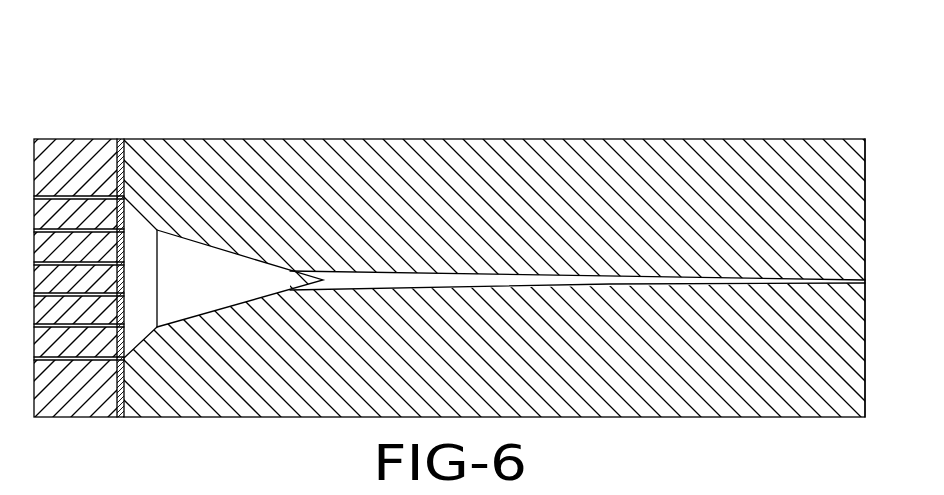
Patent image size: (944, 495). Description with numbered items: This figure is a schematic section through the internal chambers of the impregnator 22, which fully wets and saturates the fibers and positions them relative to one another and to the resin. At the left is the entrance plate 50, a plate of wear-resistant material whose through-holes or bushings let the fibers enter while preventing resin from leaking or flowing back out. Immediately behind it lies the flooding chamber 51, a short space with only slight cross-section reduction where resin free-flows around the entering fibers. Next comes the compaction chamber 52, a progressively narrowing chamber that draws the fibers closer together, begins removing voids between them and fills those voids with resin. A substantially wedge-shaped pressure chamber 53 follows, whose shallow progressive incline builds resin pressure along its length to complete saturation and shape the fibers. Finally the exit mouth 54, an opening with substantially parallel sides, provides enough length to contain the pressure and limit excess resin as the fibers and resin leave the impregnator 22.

The impregnator 22 is at (353, 101).
The entrance plate 50 is at (67, 188).
The flooding chamber 51 is at (137, 243).
The compaction chamber 52 is at (248, 278).
The pressure chamber 53 is at (472, 275).
The exit mouth 54 is at (825, 282).